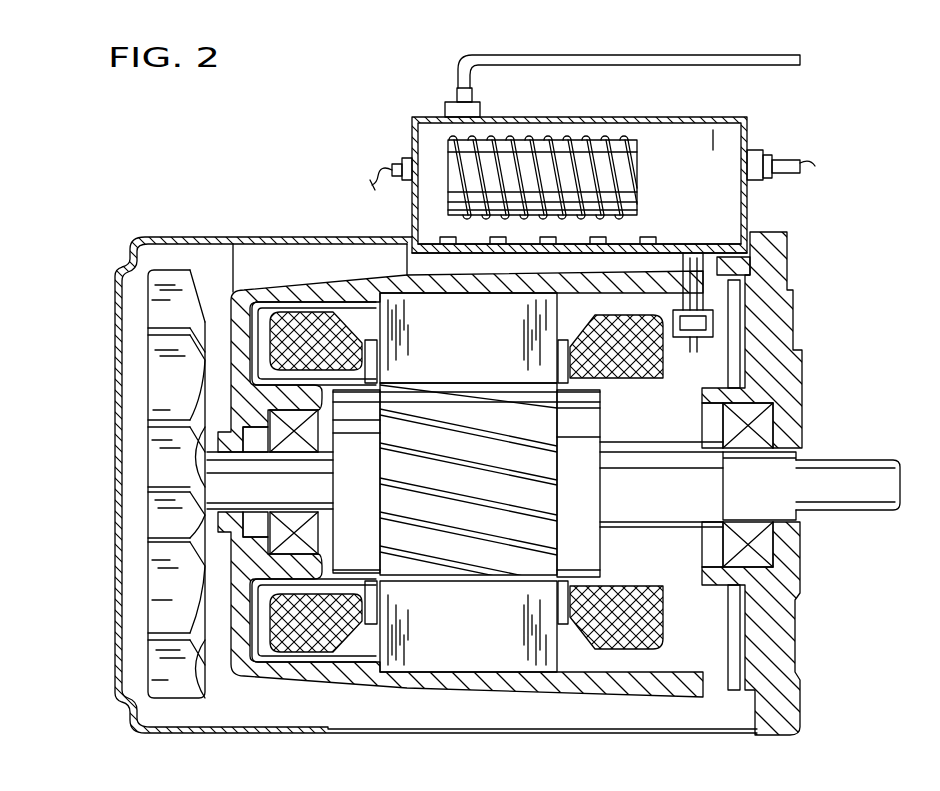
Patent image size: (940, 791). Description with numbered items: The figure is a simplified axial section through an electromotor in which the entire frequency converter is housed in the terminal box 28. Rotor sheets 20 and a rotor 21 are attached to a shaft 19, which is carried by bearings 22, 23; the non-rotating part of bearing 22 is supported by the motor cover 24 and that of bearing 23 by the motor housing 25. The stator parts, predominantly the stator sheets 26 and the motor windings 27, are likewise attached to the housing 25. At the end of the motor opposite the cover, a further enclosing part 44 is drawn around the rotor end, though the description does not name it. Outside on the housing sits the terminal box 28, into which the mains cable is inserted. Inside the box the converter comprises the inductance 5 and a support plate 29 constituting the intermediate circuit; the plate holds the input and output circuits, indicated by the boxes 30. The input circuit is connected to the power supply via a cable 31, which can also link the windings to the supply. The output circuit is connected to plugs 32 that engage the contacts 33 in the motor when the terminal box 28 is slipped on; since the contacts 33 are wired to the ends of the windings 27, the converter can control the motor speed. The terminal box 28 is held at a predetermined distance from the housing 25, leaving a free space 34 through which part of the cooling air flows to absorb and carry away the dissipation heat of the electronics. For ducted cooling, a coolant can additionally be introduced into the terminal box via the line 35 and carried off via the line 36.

The inductance 5 is at (553, 165).
The shaft 19 is at (870, 465).
The rotor sheets 20 is at (540, 540).
The rotor 21 is at (163, 380).
The bearing 22 is at (760, 420).
The bearing 23 is at (323, 508).
The motor cover 24 is at (775, 345).
The motor housing 25 is at (355, 287).
The stator sheets 26 is at (480, 353).
The motor windings 27 is at (298, 330).
The terminal box 28 is at (412, 138).
The support plate 29 is at (662, 244).
The boxes 30 is at (605, 240).
The cable 31 is at (380, 167).
The plugs 32 is at (722, 244).
The contacts 33 is at (700, 320).
The free space 34 is at (437, 268).
The line 35 is at (647, 58).
The line 36 is at (785, 155).
The fan cover 44 is at (127, 252).